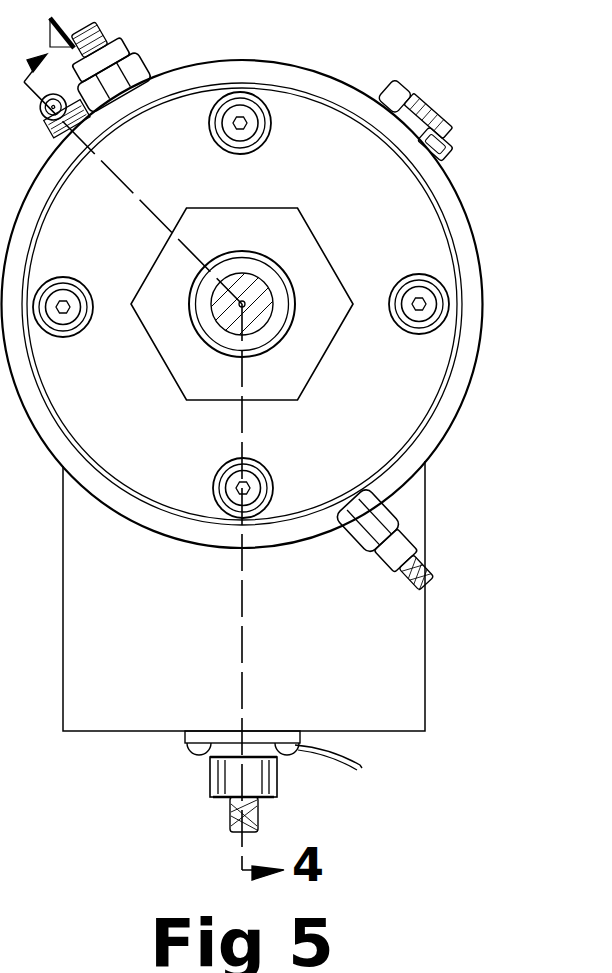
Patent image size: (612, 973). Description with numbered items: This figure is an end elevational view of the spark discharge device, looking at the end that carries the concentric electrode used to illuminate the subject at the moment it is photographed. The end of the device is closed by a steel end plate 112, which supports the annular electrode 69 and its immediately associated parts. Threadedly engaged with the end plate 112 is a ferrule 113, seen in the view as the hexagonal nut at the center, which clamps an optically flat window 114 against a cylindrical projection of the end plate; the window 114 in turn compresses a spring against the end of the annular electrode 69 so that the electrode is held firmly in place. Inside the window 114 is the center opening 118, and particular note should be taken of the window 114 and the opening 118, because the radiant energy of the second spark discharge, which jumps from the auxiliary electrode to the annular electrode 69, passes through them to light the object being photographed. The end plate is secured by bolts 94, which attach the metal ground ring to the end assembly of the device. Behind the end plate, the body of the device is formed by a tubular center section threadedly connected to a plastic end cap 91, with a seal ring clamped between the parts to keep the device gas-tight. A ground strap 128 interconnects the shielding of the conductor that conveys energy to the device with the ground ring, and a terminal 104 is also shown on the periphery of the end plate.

The annular electrode 69 is at (281, 322).
The end cap 91 is at (425, 493).
The bolts 94 is at (77, 320).
The terminal screw 104 is at (452, 100).
The end plate 112 is at (365, 443).
The ferrule 113 is at (315, 370).
The window 114 is at (263, 283).
The center opening 118 is at (242, 301).
The ground strap 128 is at (361, 768).